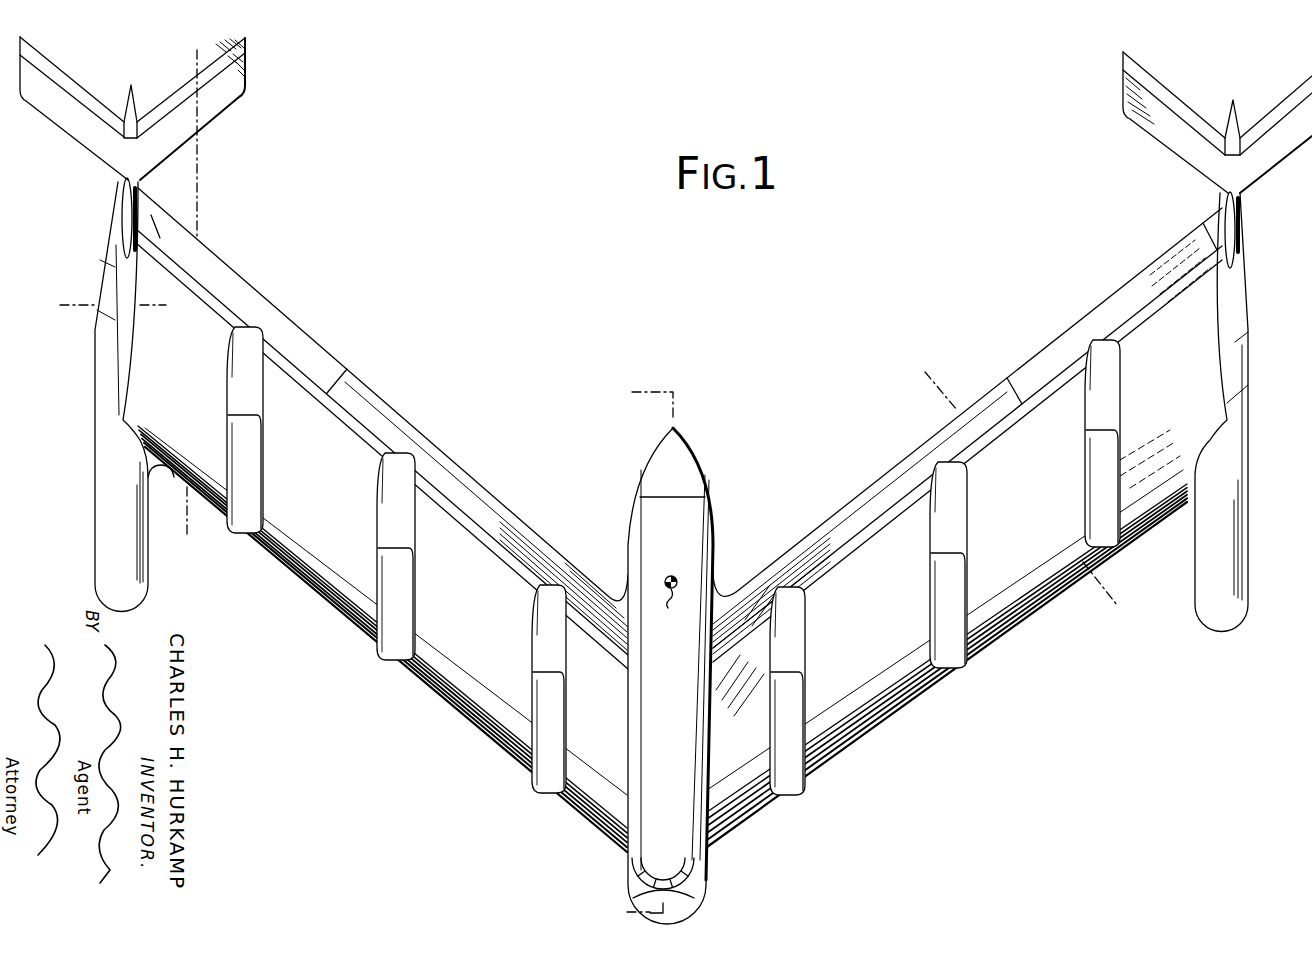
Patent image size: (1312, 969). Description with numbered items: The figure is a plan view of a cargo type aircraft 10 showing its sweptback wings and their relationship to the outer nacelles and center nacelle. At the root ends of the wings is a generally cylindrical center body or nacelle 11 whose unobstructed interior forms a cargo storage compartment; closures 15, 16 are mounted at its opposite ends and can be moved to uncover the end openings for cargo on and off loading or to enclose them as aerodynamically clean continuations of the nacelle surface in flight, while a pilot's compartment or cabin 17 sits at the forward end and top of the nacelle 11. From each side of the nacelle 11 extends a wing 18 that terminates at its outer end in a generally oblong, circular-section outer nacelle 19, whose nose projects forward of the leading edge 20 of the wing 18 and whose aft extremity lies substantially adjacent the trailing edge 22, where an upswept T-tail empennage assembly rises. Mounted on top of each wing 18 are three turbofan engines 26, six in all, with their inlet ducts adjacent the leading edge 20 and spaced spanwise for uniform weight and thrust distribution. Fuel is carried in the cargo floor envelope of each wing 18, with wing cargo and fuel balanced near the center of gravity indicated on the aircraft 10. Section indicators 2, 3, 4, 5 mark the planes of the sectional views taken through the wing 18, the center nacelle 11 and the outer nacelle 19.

The cargo type aircraft 10 is at (740, 388).
The center body or nacelle 11 is at (680, 689).
The closure 15 is at (695, 903).
The closure 16 is at (706, 465).
The pilot's compartment or cabin 17 is at (633, 866).
The wing 18 is at (337, 538).
The outer nacelle 19 is at (150, 580).
The leading edge 20 is at (472, 731).
The trailing edge 22 is at (410, 427).
The engines 26 is at (265, 474).
The section line 2- 2 is at (925, 372).
The section line 3- 3 is at (632, 392).
The section line 4- 4 is at (58, 303).
The section line 5- 5 is at (194, 47).